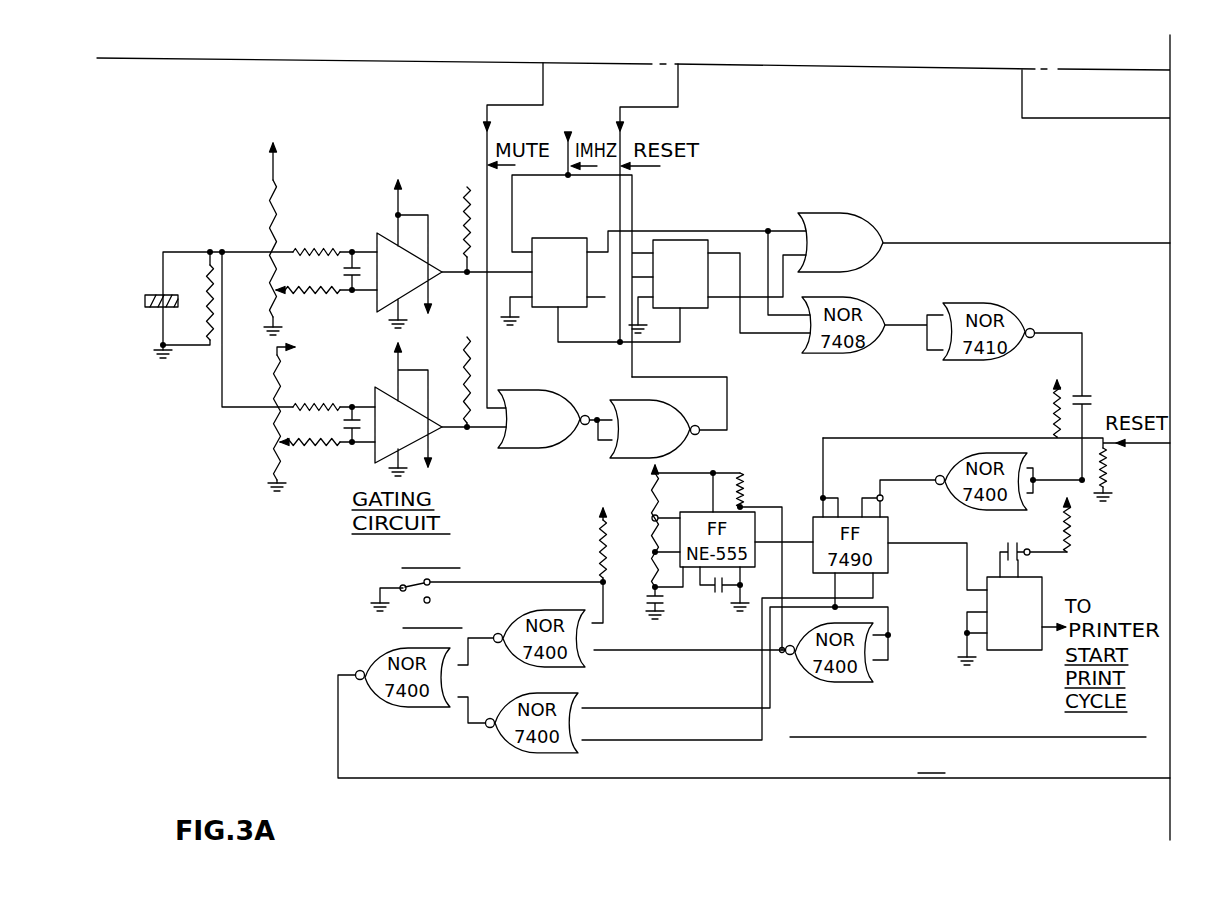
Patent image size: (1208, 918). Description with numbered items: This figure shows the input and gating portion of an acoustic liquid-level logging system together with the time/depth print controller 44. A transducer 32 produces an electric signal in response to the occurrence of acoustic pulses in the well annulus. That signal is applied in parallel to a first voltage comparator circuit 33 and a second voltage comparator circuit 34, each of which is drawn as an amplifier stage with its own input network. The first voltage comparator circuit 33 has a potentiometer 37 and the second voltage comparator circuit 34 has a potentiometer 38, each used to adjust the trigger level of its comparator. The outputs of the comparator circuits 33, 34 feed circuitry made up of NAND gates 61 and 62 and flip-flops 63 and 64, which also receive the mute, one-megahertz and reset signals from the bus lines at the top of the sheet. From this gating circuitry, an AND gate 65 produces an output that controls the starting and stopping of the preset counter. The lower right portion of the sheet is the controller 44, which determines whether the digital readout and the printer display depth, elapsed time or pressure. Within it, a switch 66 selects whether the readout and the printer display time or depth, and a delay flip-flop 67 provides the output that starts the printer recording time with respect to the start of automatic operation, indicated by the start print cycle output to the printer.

The transducer 32 is at (155, 294).
The first voltage comparator circuit 33 is at (380, 235).
The second voltage comparator circuit 34 is at (386, 390).
The potentiometer 37 is at (276, 301).
The potentiometer 38 is at (276, 457).
The controller 44 is at (754, 726).
The NAND gate 61 is at (541, 389).
The NAND gate 62 is at (630, 399).
The flip-flop 63 is at (566, 237).
The flip-flop 64 is at (682, 238).
The AND gate 65 is at (834, 213).
The switch 66 is at (402, 585).
The delay flip-flop 67 is at (1044, 587).